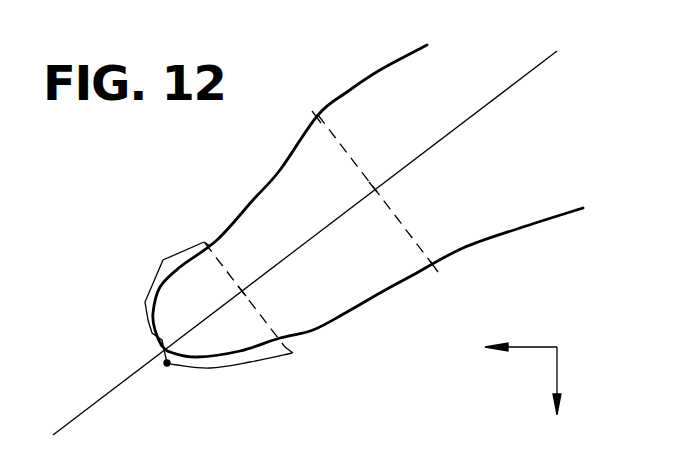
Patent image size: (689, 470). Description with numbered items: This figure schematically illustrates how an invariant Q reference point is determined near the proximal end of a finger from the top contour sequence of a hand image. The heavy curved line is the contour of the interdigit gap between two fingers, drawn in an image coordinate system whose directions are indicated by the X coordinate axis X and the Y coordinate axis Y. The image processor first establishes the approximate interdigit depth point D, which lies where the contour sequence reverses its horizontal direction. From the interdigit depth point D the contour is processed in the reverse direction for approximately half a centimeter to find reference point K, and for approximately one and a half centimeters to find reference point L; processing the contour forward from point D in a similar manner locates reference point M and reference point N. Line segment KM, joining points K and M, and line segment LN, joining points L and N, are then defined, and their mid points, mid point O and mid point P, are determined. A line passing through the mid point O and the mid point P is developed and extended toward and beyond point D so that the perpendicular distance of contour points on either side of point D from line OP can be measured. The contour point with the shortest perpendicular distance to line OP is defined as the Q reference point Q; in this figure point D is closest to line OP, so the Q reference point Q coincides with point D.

The reference point K is at (193, 229).
The reference point L is at (308, 104).
The reference point M is at (303, 364).
The reference point N is at (447, 278).
The mid point O is at (260, 295).
The mid point P is at (379, 171).
The Q reference point Q is at (154, 361).
The interdigit depth point D is at (166, 377).
The X coordinate axis X is at (511, 349).
The Y coordinate axis Y is at (557, 395).